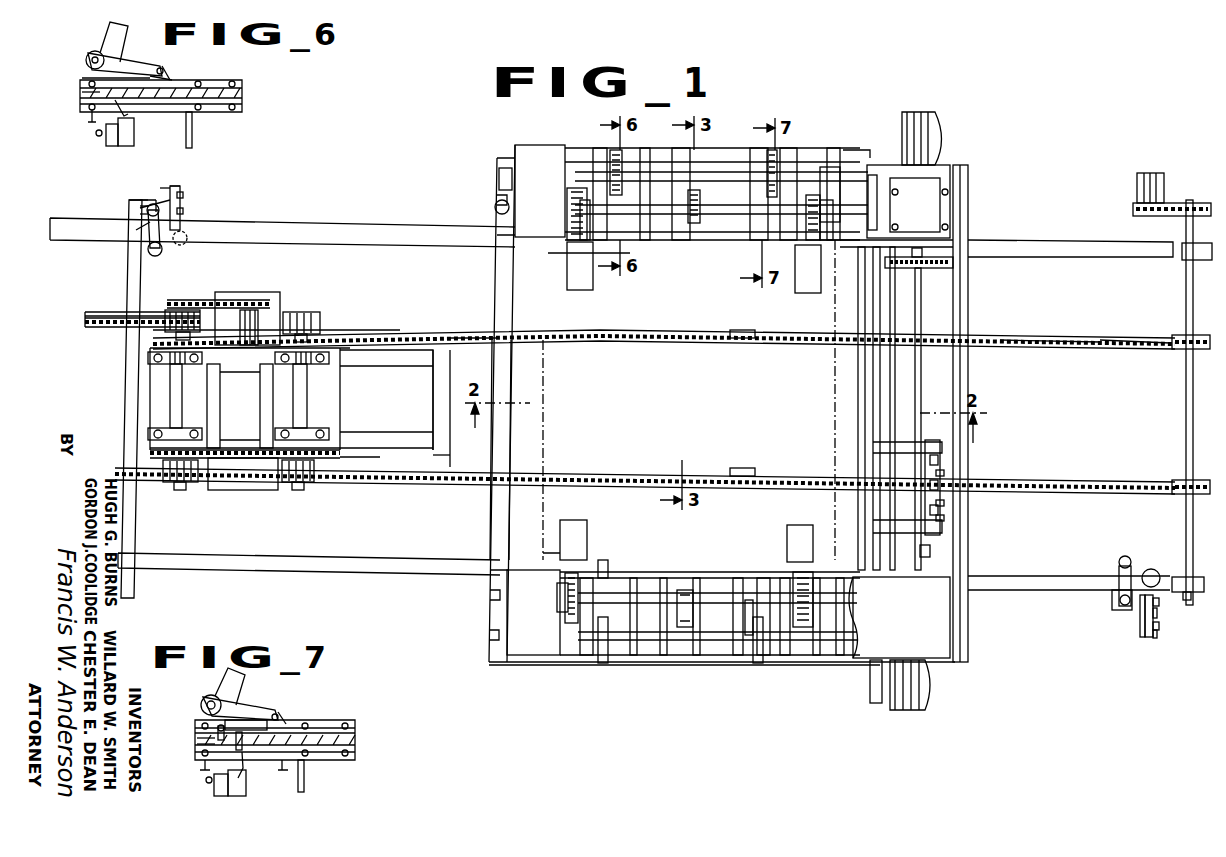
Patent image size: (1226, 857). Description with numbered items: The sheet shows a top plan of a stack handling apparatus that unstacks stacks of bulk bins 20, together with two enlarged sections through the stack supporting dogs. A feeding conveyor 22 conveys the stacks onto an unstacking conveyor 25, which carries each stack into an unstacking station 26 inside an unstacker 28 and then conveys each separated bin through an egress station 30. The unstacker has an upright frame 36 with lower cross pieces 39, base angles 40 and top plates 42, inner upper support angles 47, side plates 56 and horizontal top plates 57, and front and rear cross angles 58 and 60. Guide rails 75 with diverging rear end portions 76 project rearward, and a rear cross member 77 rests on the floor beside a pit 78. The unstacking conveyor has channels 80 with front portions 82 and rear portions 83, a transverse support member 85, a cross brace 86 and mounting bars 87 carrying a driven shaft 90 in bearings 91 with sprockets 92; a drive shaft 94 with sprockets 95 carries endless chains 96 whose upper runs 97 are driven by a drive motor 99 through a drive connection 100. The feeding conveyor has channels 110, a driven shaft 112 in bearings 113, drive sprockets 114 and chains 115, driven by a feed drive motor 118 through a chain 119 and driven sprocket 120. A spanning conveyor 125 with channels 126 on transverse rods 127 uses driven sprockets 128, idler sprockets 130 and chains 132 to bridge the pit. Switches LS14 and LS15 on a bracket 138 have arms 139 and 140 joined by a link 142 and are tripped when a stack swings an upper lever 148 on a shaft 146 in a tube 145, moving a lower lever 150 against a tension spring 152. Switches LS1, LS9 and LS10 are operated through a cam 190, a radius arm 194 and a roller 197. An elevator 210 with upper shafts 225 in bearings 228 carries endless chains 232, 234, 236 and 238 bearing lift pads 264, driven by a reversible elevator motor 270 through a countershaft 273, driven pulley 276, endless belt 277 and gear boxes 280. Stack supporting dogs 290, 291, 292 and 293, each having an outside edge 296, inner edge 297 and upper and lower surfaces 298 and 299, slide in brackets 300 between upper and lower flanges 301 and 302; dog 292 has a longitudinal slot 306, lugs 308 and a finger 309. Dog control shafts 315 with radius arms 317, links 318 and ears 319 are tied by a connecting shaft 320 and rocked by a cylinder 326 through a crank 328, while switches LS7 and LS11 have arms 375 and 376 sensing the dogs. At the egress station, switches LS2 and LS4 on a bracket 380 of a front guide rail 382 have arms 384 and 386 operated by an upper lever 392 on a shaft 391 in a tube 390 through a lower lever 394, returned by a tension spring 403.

In FIG. 1, the bulk bins 20 is at (548, 398).
In FIG. 1, the feeding conveyor 22 is at (80, 312).
In FIG. 1, the unstacking conveyor 25 is at (384, 330).
In FIG. 1, the unstacking station 26 is at (505, 155).
In FIG. 1, the unstacker 28 is at (842, 150).
In FIG. 1, the egress station 30 is at (1062, 568).
In FIG. 1, the upright frame 36 is at (856, 152).
In FIG. 1, the lower cross pieces 39 is at (496, 512).
In FIG. 1, the base angles 40 is at (612, 580).
In FIG. 1, the top plates 42 is at (530, 145).
In FIG. 6, the upper support angles 47 is at (80, 112).
In FIG. 7, the upper support angles 47 is at (210, 780).
In FIG. 1, the upper support angles 47 is at (726, 150).
In FIG. 1, the side plates 56 is at (958, 165).
In FIG. 1, the horizontal top plates 57 is at (940, 632).
In FIG. 1, the front cross angles 58 is at (968, 360).
In FIG. 1, the rear cross angles 60 is at (865, 383).
In FIG. 1, the guide rails 75 is at (340, 226).
In FIG. 1, the rear end portions 76 is at (64, 220).
In FIG. 1, the rear cross member 77 is at (124, 388).
In FIG. 1, the pit 78 is at (260, 300).
In FIG. 1, the channels 80 is at (790, 344).
In FIG. 1, the front portions 82 is at (1058, 340).
In FIG. 1, the rear portions 83 is at (470, 330).
In FIG. 1, the transverse support member 85 is at (348, 352).
In FIG. 1, the cross brace 86 is at (430, 452).
In FIG. 1, the mounting bars 87 is at (408, 440).
In FIG. 1, the driven shaft 90 is at (312, 310).
In FIG. 1, the bearings 91 is at (342, 440).
In FIG. 1, the sprockets 92 is at (302, 486).
In FIG. 1, the drive shaft 94 is at (1186, 290).
In FIG. 1, the sprockets 95 is at (1190, 352).
In FIG. 1, the endless chains 96 is at (1128, 350).
In FIG. 1, the upper runs 97 is at (764, 452).
In FIG. 1, the unstacking conveyor drive motor 99 is at (1140, 186).
In FIG. 1, the drive connection 100 is at (1178, 203).
In FIG. 1, the channels 110 is at (120, 330).
In FIG. 1, the driven shaft 112 is at (172, 400).
In FIG. 1, the bearings 113 is at (185, 366).
In FIG. 1, the drive sprockets 114 is at (195, 484).
In FIG. 1, the chains 115 is at (110, 326).
In FIG. 1, the feed drive motor 118 is at (256, 325).
In FIG. 1, the chain 119 is at (204, 304).
In FIG. 1, the driven sprocket 120 is at (192, 300).
In FIG. 1, the spanning conveyor 125 is at (232, 470).
In FIG. 1, the channels 126 is at (246, 448).
In FIG. 1, the transverse rods 127 is at (262, 408).
In FIG. 1, the driven sprockets 128 is at (340, 457).
In FIG. 1, the idler sprockets 130 is at (158, 452).
In FIG. 1, the chains 132 is at (246, 360).
In FIG. 1, the bracket 138 is at (170, 186).
In FIG. 1, the arm 139 is at (184, 194).
In FIG. 1, the arm 140 is at (184, 210).
In FIG. 1, the link 142 is at (164, 200).
In FIG. 1, the tube 145 is at (146, 216).
In FIG. 1, the shaft 146 is at (145, 210).
In FIG. 1, the upper lever 148 is at (148, 228).
In FIG. 1, the lower lever 150 is at (170, 235).
In FIG. 1, the tension spring 152 is at (162, 250).
In FIG. 1, the cam 190 is at (944, 473).
In FIG. 1, the radius arm 194 is at (926, 560).
In FIG. 1, the roller 197 is at (826, 600).
In FIG. 1, the elevator 210 is at (577, 186).
In FIG. 1, the upper shafts 225 is at (660, 210).
In FIG. 1, the bearings 228 is at (688, 590).
In FIG. 1, the endless chain 232 is at (557, 610).
In FIG. 1, the endless chain 234 is at (815, 590).
In FIG. 1, the endless chain 236 is at (834, 210).
In FIG. 1, the endless chain 238 is at (580, 196).
In FIG. 1, the lift pads 264 is at (590, 282).
In FIG. 1, the reversible elevator motor 270 is at (938, 212).
In FIG. 1, the countershaft 273 is at (921, 300).
In FIG. 1, the driven pulley 276 is at (924, 270).
In FIG. 1, the endless belt 277 is at (945, 272).
In FIG. 1, the gear boxes 280 is at (920, 112).
In FIG. 1, the stack supporting dog 290 is at (610, 560).
In FIG. 1, the stack supporting dog 291 is at (742, 600).
In FIG. 7, the stack supporting dog 292 is at (197, 738).
In FIG. 1, the stack supporting dog 292 is at (760, 225).
In FIG. 6, the stack supporting dog 293 is at (80, 86).
In FIG. 1, the stack supporting dog 293 is at (655, 225).
In FIG. 6, the outside edge 296 is at (80, 96).
In FIG. 7, the outside edge 296 is at (197, 744).
In FIG. 6, the inner edge 297 is at (243, 94).
In FIG. 7, the inner edge 297 is at (358, 738).
In FIG. 6, the upper surface 298 is at (182, 85).
In FIG. 7, the upper surface 298 is at (330, 733).
In FIG. 6, the lower surface 299 is at (210, 110).
In FIG. 7, the lower surface 299 is at (330, 750).
In FIG. 6, the brackets 300 is at (225, 80).
In FIG. 7, the brackets 300 is at (325, 720).
In FIG. 6, the upper flange 301 is at (230, 88).
In FIG. 7, the upper flange 301 is at (320, 728).
In FIG. 6, the lower flange 302 is at (243, 106).
In FIG. 7, the lower flange 302 is at (325, 755).
In FIG. 7, the longitudinal slot 306 is at (248, 720).
In FIG. 7, the lugs 308 is at (218, 728).
In FIG. 7, the finger 309 is at (205, 756).
In FIG. 1, the dog control shafts 315 is at (835, 152).
In FIG. 6, the radius arms 317 is at (102, 40).
In FIG. 7, the radius arms 317 is at (217, 680).
In FIG. 6, the links 318 is at (86, 60).
In FIG. 7, the links 318 is at (205, 700).
In FIG. 6, the ears 319 is at (176, 80).
In FIG. 7, the ears 319 is at (294, 718).
In FIG. 1, the connecting shaft 320 is at (880, 365).
In FIG. 1, the cylinder 326 is at (495, 207).
In FIG. 1, the crank 328 is at (499, 172).
In FIG. 7, the arm 375 is at (258, 775).
In FIG. 6, the arm 376 is at (130, 116).
In FIG. 1, the bracket 380 is at (1145, 630).
In FIG. 1, the front guide rail 382 is at (1085, 244).
In FIG. 1, the arm 384 is at (1160, 604).
In FIG. 1, the arm 386 is at (1160, 626).
In FIG. 1, the tube 390 is at (1125, 602).
In FIG. 1, the shaft 391 is at (1120, 610).
In FIG. 1, the upper lever 392 is at (1120, 580).
In FIG. 1, the lower lever 394 is at (1140, 612).
In FIG. 1, the tension spring 403 is at (1148, 570).
In FIG. 1, the switch LS1 is at (940, 510).
In FIG. 1, the switch LS2 is at (1158, 612).
In FIG. 1, the switch LS4 is at (1158, 636).
In FIG. 7, the switch LS7 is at (237, 790).
In FIG. 1, the switch LS9 is at (940, 485).
In FIG. 1, the switch LS10 is at (940, 460).
In FIG. 6, the switch LS11 is at (112, 138).
In FIG. 1, the switch LS14 is at (180, 186).
In FIG. 1, the switch LS15 is at (182, 225).